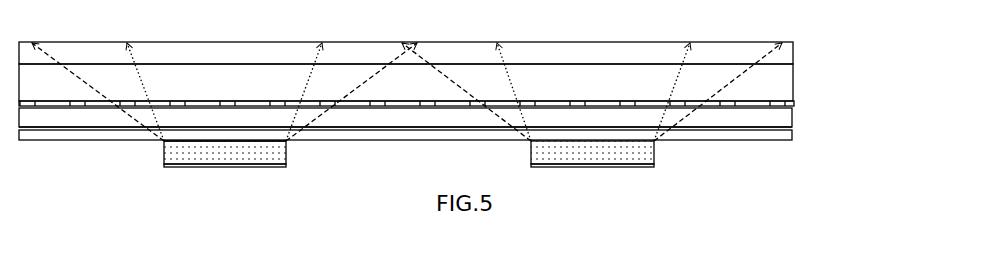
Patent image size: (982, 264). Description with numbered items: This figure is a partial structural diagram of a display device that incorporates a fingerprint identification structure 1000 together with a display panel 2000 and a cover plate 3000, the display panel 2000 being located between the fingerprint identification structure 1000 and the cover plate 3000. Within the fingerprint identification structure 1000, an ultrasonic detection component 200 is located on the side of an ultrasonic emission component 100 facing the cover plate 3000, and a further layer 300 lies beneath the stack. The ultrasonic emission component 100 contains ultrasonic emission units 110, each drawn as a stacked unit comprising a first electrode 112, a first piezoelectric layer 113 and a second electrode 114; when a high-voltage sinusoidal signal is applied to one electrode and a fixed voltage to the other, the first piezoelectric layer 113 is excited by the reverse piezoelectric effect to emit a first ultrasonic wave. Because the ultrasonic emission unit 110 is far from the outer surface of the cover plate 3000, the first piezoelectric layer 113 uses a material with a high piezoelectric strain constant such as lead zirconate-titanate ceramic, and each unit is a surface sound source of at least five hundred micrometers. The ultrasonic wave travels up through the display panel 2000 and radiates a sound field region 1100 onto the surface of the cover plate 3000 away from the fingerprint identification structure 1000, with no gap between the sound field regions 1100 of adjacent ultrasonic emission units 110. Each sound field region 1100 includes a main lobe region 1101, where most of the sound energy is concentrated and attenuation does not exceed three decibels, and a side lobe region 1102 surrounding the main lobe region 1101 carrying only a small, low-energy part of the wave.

The cover plate 3000 is at (438, 56).
The display panel 2000 is at (438, 82).
The fingerprint identification structure 1000 is at (831, 102).
The ultrasonic detection component 200 is at (796, 108).
The bottom plate 300 is at (425, 146).
The ultrasonic emission component 100 is at (640, 155).
The ultrasonic emission unit 110 is at (640, 155).
The first electrode 112 is at (257, 156).
The first piezoelectric layer 113 is at (189, 159).
The second electrode 114 is at (189, 151).
The sound field region 1100 is at (417, 37).
The main lobe region 1101 is at (690, 37).
The side lobe region 1102 is at (782, 37).